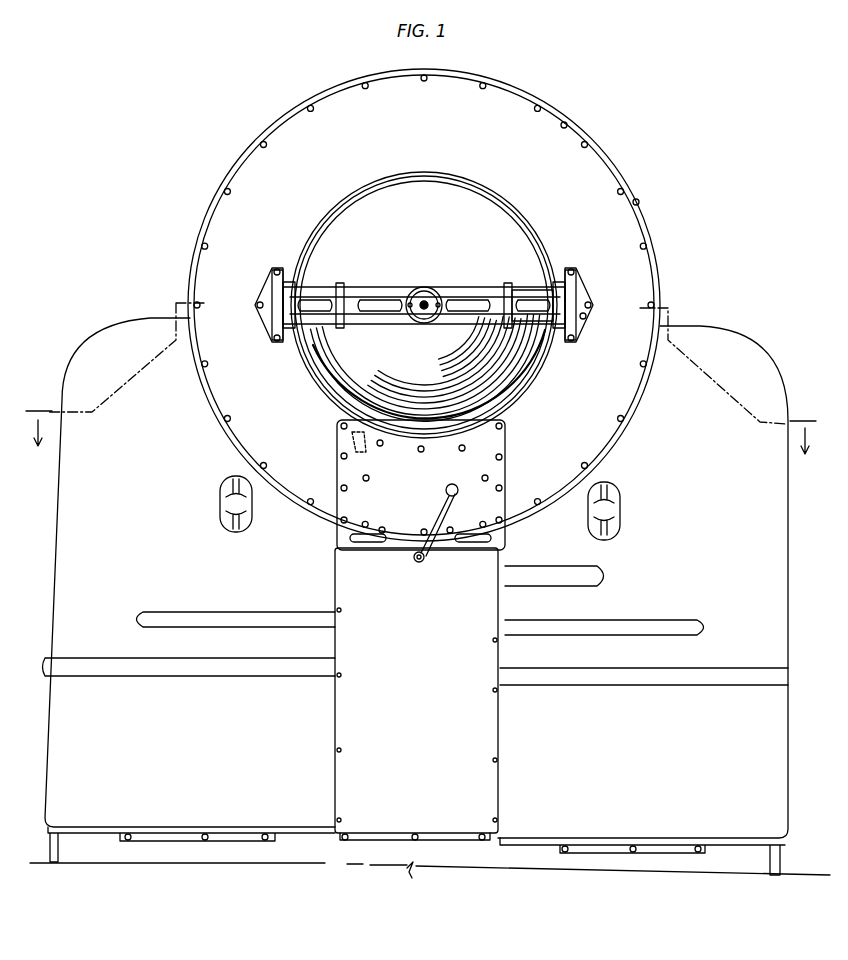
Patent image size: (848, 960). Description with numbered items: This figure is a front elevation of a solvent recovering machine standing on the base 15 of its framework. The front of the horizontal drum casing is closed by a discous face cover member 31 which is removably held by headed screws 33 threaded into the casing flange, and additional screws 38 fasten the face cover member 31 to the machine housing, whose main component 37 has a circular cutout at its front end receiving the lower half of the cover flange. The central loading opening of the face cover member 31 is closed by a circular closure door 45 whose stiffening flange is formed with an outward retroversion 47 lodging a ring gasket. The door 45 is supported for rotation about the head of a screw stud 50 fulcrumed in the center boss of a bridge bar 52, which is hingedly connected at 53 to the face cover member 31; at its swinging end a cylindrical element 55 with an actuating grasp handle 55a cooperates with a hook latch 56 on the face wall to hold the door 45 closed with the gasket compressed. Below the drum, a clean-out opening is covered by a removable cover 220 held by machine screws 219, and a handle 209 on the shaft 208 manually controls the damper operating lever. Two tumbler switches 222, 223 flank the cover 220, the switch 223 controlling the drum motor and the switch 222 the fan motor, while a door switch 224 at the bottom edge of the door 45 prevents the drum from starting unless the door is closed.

The base 15 is at (407, 880).
The face cover member 31 is at (526, 100).
The headed screws 33 is at (640, 242).
The main component of the machine housing 37 is at (428, 589).
The screws 38 is at (655, 262).
The circular closure door 45 is at (421, 182).
The outward retroversion 47 is at (478, 190).
The screw stud 50 is at (424, 300).
The bridge bar 52 is at (388, 290).
The hinge connection 53 is at (268, 297).
The cylindrical element 55 is at (585, 300).
The actuating grasp handle 55a is at (520, 292).
The hook latch 56 is at (588, 318).
The shaft 208 is at (418, 562).
The handle 209 is at (445, 507).
The machine screws 219 is at (348, 520).
The removable cover 220 is at (478, 560).
The tumbler switch 222 is at (212, 494).
The tumbler switch 223 is at (626, 494).
The door switch 224 is at (350, 438).